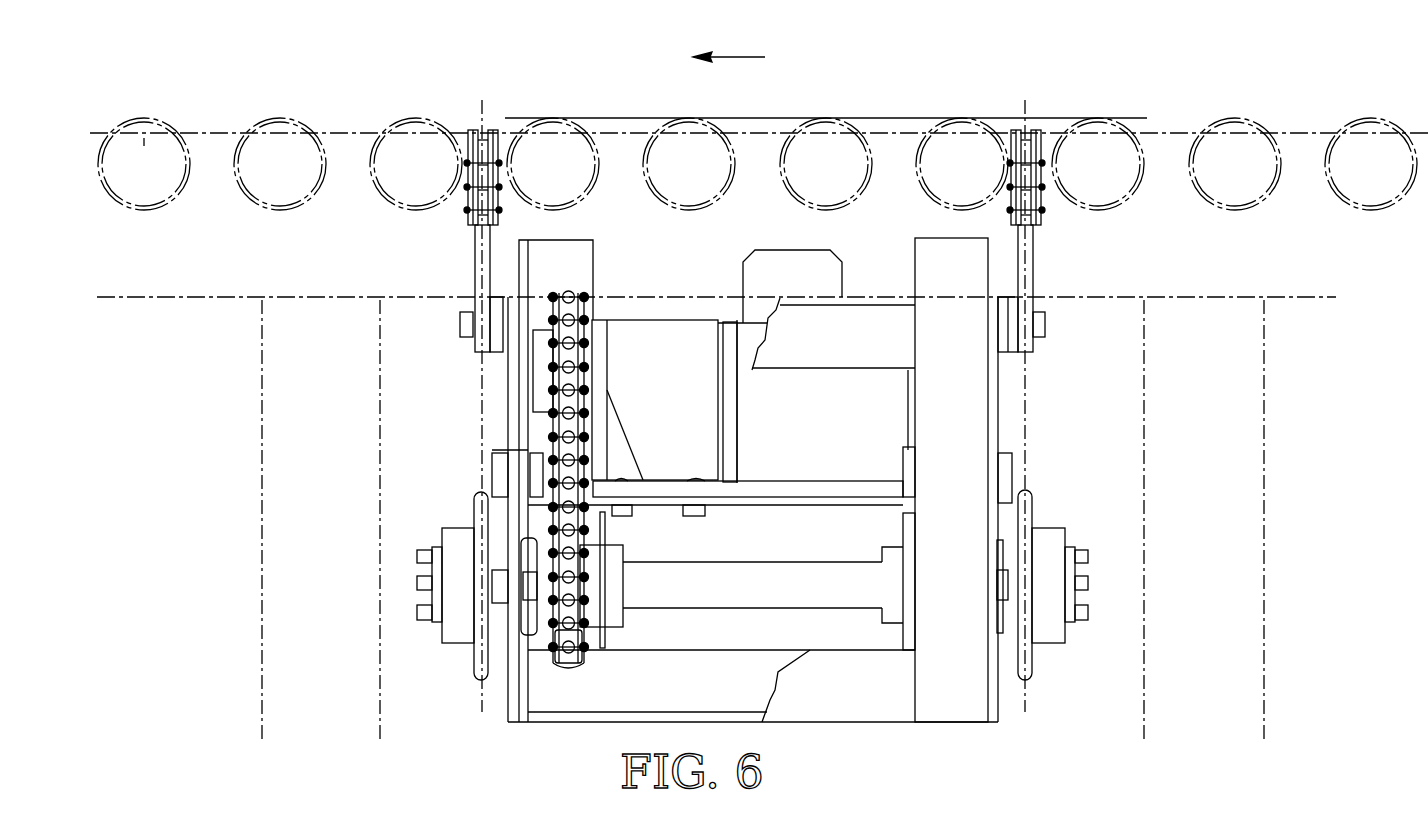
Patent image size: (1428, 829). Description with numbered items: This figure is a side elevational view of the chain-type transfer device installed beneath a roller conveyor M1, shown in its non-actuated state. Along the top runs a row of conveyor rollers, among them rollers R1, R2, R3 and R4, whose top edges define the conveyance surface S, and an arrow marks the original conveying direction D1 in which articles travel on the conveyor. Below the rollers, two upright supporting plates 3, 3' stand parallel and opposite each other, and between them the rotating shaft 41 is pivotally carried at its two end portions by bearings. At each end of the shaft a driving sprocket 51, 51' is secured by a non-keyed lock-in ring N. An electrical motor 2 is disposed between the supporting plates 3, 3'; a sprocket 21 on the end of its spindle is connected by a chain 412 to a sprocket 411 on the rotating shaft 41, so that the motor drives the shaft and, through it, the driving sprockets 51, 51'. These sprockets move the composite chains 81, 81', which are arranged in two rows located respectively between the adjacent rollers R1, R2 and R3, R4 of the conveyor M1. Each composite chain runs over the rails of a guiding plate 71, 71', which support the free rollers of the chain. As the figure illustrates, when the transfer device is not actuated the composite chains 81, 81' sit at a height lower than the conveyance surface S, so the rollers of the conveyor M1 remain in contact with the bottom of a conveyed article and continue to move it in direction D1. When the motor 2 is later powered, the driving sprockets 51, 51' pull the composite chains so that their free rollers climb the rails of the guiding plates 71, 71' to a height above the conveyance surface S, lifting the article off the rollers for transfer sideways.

The electrical motor 2 is at (688, 335).
The upright supporting plate 3 is at (743, 500).
The upright supporting plate 3' is at (981, 494).
The sprocket 21 is at (567, 327).
The rotating shaft 41 is at (748, 593).
The sprocket 411 is at (580, 643).
The chain 412 is at (580, 468).
The driving sprocket 51 is at (462, 606).
The driving sprocket 51' is at (1059, 596).
The guiding plate 71 is at (458, 288).
The guiding plate 71' is at (1046, 288).
The composite chain 81 is at (447, 196).
The composite chain 81' is at (1050, 186).
The non-keyed lock-in ring N is at (419, 552).
The roller R1 is at (437, 128).
The roller R2 is at (568, 128).
The roller R3 is at (930, 128).
The roller R4 is at (1077, 133).
The conveyance surface S is at (858, 128).
The roller conveyor M1 is at (1172, 105).
The original conveying direction D1 is at (748, 57).